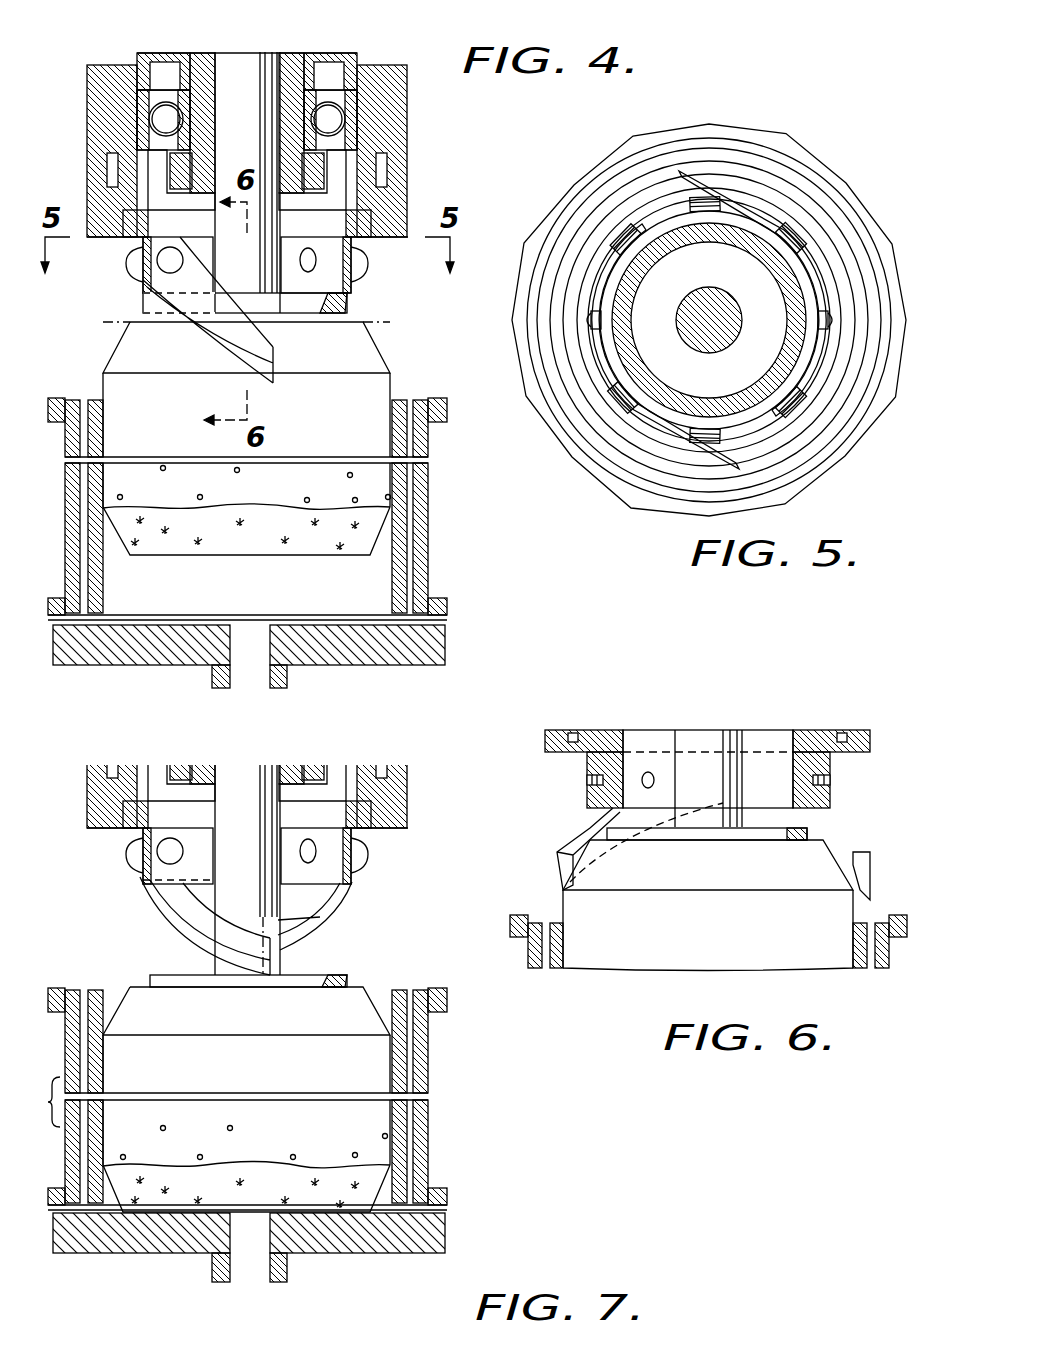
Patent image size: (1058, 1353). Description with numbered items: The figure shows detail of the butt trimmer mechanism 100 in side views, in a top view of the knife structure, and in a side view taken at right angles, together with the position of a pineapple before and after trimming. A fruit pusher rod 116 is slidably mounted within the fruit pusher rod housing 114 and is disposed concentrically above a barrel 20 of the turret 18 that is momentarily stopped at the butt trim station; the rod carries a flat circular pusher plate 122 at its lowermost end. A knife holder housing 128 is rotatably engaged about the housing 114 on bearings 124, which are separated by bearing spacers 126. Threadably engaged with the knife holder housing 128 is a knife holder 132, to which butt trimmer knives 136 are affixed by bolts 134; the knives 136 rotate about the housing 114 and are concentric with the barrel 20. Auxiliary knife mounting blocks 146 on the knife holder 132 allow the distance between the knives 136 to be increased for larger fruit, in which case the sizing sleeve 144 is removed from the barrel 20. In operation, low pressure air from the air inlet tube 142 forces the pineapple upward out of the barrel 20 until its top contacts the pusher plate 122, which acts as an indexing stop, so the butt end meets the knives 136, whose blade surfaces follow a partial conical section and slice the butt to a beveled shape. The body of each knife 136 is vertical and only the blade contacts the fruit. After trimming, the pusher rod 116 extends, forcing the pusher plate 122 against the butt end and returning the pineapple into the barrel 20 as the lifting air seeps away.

In FIG. 4, the turret 18 is at (430, 517).
In FIG. 7, the turret 18 is at (430, 1155).
In FIG. 4, the barrel 20 is at (367, 577).
In FIG. 7, the barrel 20 is at (418, 1060).
In FIG. 4, the butt trimmer mechanism 100 is at (462, 129).
In FIG. 4, the fruit pusher rod housing 114 is at (205, 53).
In FIG. 4, the fruit pusher rod 116 is at (247, 57).
In FIG. 6, the fruit pusher rod 116 is at (707, 738).
In FIG. 7, the fruit pusher rod 116 is at (300, 921).
In FIG. 4, the pusher plate 122 is at (347, 312).
In FIG. 6, the pusher plate 122 is at (805, 833).
In FIG. 7, the pusher plate 122 is at (350, 977).
In FIG. 4, the bearings 124 is at (343, 117).
In FIG. 4, the bearing spacers 126 is at (323, 57).
In FIG. 4, the knife holder housing 128 is at (392, 193).
In FIG. 6, the knife holder housing 128 is at (858, 730).
In FIG. 4, the knife holder 132 is at (358, 228).
In FIG. 5, the knife holder 132 is at (621, 275).
In FIG. 6, the knife holder 132 is at (810, 730).
In FIG. 5, the bolts 134 is at (617, 395).
In FIG. 4, the butt trimmer knives 136 is at (143, 292).
In FIG. 5, the butt trimmer knives 136 is at (765, 212).
In FIG. 6, the butt trimmer knives 136 is at (868, 868).
In FIG. 7, the butt trimmer knives 136 is at (177, 918).
In FIG. 4, the air inlet tube 142 is at (253, 680).
In FIG. 4, the sizing sleeve 144 is at (397, 480).
In FIG. 7, the sizing sleeve 144 is at (400, 1118).
In FIG. 5, the auxiliary knife mounting blocks 146 is at (669, 208).
In FIG. 6, the auxiliary knife mounting blocks 146 is at (590, 766).